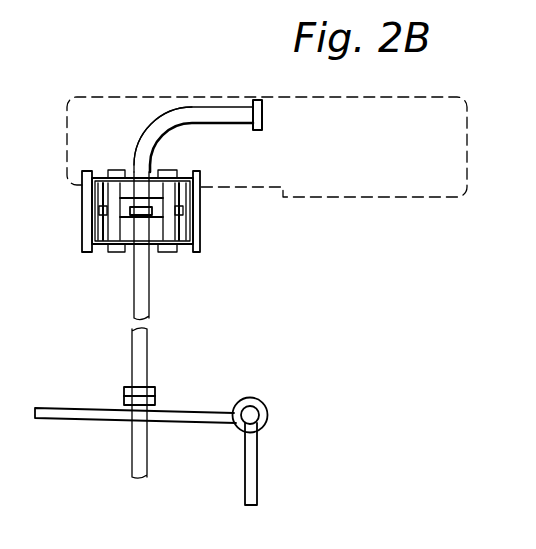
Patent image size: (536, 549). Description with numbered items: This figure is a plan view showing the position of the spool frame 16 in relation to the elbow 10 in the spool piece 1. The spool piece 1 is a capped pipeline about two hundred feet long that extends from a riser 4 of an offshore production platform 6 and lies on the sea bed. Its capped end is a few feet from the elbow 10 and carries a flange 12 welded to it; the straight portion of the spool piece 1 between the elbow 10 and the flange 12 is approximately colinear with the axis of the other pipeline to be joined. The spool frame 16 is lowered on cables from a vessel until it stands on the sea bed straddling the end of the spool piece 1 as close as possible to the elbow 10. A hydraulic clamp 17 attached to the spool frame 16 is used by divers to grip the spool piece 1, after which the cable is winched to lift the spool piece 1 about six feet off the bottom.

The spool piece 1 is at (210, 107).
The riser 4 is at (142, 457).
The offshore production platform 6 is at (254, 475).
The elbow 10 is at (151, 114).
The flange 12 is at (264, 110).
The spool frame 16 is at (198, 252).
The hydraulic clamp 17 is at (130, 215).